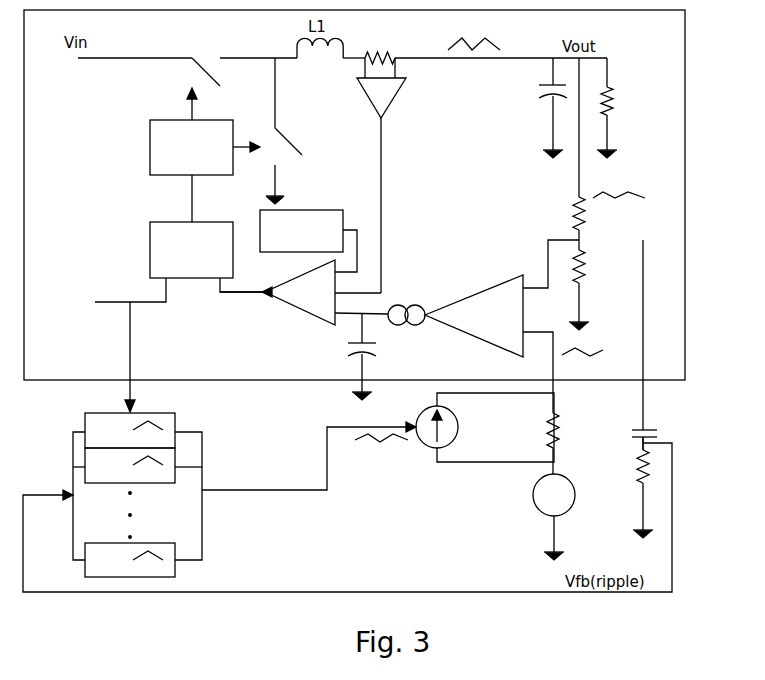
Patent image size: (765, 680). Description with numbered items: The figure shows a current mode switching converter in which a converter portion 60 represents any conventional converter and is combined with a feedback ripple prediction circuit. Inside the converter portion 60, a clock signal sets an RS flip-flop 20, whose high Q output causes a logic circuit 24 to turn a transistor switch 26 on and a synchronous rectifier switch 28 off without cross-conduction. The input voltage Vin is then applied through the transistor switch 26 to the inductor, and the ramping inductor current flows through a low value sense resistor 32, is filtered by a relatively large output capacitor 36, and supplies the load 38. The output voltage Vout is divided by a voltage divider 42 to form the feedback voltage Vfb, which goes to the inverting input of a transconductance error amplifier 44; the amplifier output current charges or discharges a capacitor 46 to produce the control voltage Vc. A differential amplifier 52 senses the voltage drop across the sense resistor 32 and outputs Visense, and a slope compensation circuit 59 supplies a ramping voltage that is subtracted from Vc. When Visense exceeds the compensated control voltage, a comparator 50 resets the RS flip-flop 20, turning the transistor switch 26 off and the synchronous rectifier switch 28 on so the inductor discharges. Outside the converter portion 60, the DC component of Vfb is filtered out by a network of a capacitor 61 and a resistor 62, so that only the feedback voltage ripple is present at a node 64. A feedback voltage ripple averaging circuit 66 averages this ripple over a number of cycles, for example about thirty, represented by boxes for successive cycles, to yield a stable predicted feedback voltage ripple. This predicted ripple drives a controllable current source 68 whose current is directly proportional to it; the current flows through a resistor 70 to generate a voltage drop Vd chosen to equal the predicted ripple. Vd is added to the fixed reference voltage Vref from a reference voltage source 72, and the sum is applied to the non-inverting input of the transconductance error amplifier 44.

The RS flip-flop 20 is at (192, 280).
The logic circuit 24 is at (176, 178).
The transistor switch 26 is at (197, 57).
The synchronous rectifier switch 28 is at (302, 144).
The sense resistor 32 is at (383, 46).
The output capacitor 36 is at (533, 92).
The load 38 is at (613, 88).
The voltage divider 42 is at (558, 213).
The transconductance error amplifier 44 is at (458, 298).
The capacitor 46 is at (342, 347).
The comparator 50 is at (302, 305).
The differential amplifier 52 is at (400, 92).
The slope compensation circuit 59 is at (302, 207).
The converter portion 60 is at (685, 170).
The capacitor 61 is at (658, 432).
The resistor 62 is at (632, 467).
The node 64 is at (633, 448).
The feedback voltage ripple averaging circuit 66 is at (238, 455).
The controllable current source 68 is at (420, 445).
The resistor 70 is at (540, 433).
The reference voltage source 72 is at (537, 508).